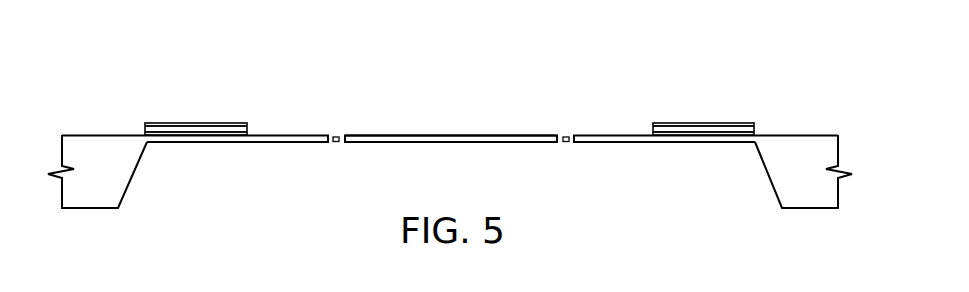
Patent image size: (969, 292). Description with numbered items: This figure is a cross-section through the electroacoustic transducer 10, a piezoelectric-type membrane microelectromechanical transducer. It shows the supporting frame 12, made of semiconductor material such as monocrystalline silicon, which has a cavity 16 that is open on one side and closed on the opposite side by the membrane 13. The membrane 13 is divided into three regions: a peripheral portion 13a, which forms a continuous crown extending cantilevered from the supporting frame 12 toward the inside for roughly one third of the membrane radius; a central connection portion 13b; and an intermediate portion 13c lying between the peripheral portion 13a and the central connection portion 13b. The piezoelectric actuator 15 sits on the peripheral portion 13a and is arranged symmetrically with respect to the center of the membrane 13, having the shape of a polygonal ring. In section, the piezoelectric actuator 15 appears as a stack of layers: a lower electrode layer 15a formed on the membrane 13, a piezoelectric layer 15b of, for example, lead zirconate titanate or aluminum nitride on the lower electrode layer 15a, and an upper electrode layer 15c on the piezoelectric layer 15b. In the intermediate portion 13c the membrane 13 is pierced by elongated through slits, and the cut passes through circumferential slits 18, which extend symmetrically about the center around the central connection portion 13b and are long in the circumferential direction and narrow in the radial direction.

The electroacoustic transducer 10 is at (767, 79).
The supporting frame 12 is at (98, 200).
The membrane 13 is at (417, 109).
The peripheral portion 13a is at (207, 143).
The central connection portion 13b is at (472, 135).
The intermediate portion 13c is at (300, 143).
The piezoelectric actuator 15 is at (201, 94).
The lower electrode layer 15a is at (183, 135).
The piezoelectric layer 15b is at (140, 128).
The upper electrode layer 15c is at (167, 123).
The cavity 16 is at (368, 200).
The circumferential slits 18 is at (341, 133).